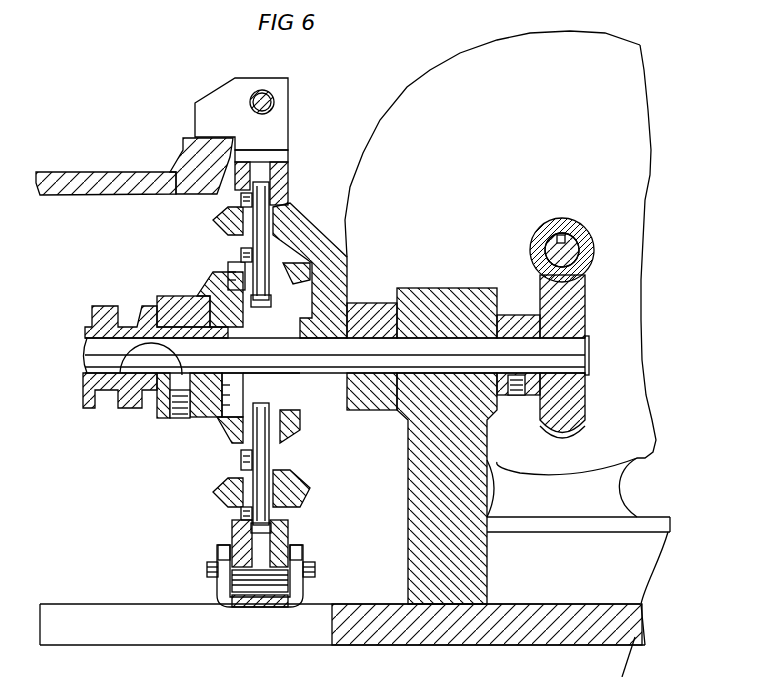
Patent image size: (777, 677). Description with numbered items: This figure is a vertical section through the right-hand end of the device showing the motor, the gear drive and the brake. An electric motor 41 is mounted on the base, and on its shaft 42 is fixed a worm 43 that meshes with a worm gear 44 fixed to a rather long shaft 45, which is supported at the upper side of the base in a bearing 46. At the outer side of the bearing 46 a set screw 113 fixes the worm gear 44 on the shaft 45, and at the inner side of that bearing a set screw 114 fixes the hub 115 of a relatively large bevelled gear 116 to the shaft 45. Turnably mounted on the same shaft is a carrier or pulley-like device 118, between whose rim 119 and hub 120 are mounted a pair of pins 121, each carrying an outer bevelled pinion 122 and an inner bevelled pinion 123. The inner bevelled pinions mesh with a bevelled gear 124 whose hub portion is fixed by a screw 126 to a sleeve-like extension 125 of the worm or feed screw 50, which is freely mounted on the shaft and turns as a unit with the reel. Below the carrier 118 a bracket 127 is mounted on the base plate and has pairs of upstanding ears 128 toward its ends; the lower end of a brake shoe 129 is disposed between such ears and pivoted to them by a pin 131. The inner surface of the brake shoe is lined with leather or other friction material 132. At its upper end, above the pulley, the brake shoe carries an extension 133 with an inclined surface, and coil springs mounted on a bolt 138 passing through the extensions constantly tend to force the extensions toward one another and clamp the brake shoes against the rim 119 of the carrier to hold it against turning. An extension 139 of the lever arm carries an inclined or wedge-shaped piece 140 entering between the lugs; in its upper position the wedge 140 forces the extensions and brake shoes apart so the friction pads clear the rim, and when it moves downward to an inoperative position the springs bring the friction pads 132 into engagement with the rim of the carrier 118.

The electric motor 41 is at (418, 70).
The shaft 42 is at (573, 243).
The worm 43 is at (541, 236).
The worm gear 44 is at (570, 308).
The shaft 45 is at (567, 350).
The bearing 46 is at (433, 290).
The worm or feed screw 50 is at (100, 310).
The set screw 113 is at (515, 393).
The set screw 114 is at (368, 408).
The hub 115 is at (357, 303).
The bevelled gear 116 is at (310, 237).
The carrier or pulley-like device 118 is at (203, 209).
The rim 119 is at (288, 172).
The hub 120 is at (268, 377).
The pin 121 is at (258, 222).
The outer bevelled pinion 122 is at (235, 230).
The inner bevelled pinion 123 is at (238, 268).
The bevelled gear 124 is at (213, 295).
The sleeve-like extension 125 is at (113, 385).
The screw 126 is at (187, 418).
The bracket 127 is at (206, 590).
The upstanding ears 128 is at (297, 552).
The brake shoe 129 is at (228, 552).
The pin 131 is at (208, 565).
The friction material 132 is at (365, 648).
The extension 133 is at (218, 102).
The bolt 138 is at (275, 100).
The extension 139 is at (112, 172).
The wedge-shaped piece 140 is at (194, 150).